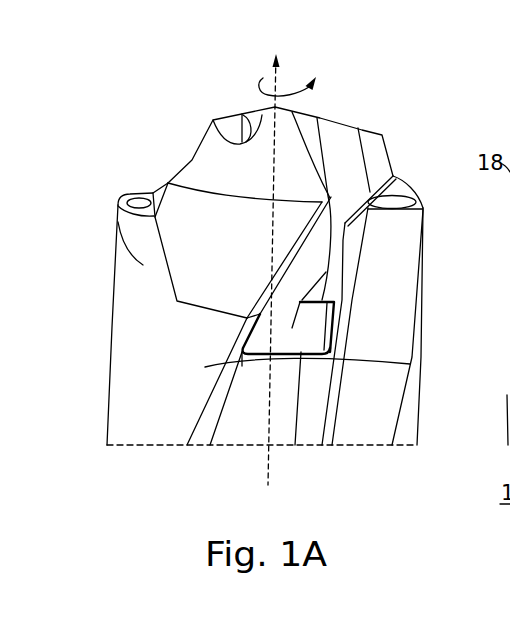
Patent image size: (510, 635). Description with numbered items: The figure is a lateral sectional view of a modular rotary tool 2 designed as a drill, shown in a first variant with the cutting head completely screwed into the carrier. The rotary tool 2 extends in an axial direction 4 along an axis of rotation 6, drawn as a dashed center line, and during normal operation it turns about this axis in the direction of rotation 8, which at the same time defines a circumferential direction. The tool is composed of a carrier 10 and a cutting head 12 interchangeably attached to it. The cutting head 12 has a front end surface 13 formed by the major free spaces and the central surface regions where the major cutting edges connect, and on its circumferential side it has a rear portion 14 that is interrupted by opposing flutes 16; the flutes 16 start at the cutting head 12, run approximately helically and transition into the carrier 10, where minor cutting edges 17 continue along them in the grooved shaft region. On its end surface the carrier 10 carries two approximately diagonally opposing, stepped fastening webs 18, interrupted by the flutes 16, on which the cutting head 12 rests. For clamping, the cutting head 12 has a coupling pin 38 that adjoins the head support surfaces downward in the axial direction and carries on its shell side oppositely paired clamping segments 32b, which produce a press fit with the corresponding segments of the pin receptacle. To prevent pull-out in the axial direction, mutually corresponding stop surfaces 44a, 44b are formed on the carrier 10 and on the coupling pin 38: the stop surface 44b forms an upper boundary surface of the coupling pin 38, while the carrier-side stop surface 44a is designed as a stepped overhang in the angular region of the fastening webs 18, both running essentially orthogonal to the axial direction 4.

The rotary tool 2 is at (423, 61).
The axial direction 4 is at (231, 253).
The axis of rotation 6 is at (273, 72).
The direction of rotation 8 is at (314, 92).
The carrier 10 is at (127, 432).
The cutting head 12 is at (190, 198).
The front end surface 13 is at (240, 153).
The rear portion 14 is at (172, 250).
The flutes 16 is at (275, 427).
The minor cutting edges 17 is at (333, 272).
The fastening webs 18 is at (412, 242).
The clamping segments 32b is at (334, 310).
The coupling pin 38 is at (298, 337).
The stop surface 44a is at (216, 405).
The stop surface 44b is at (292, 328).